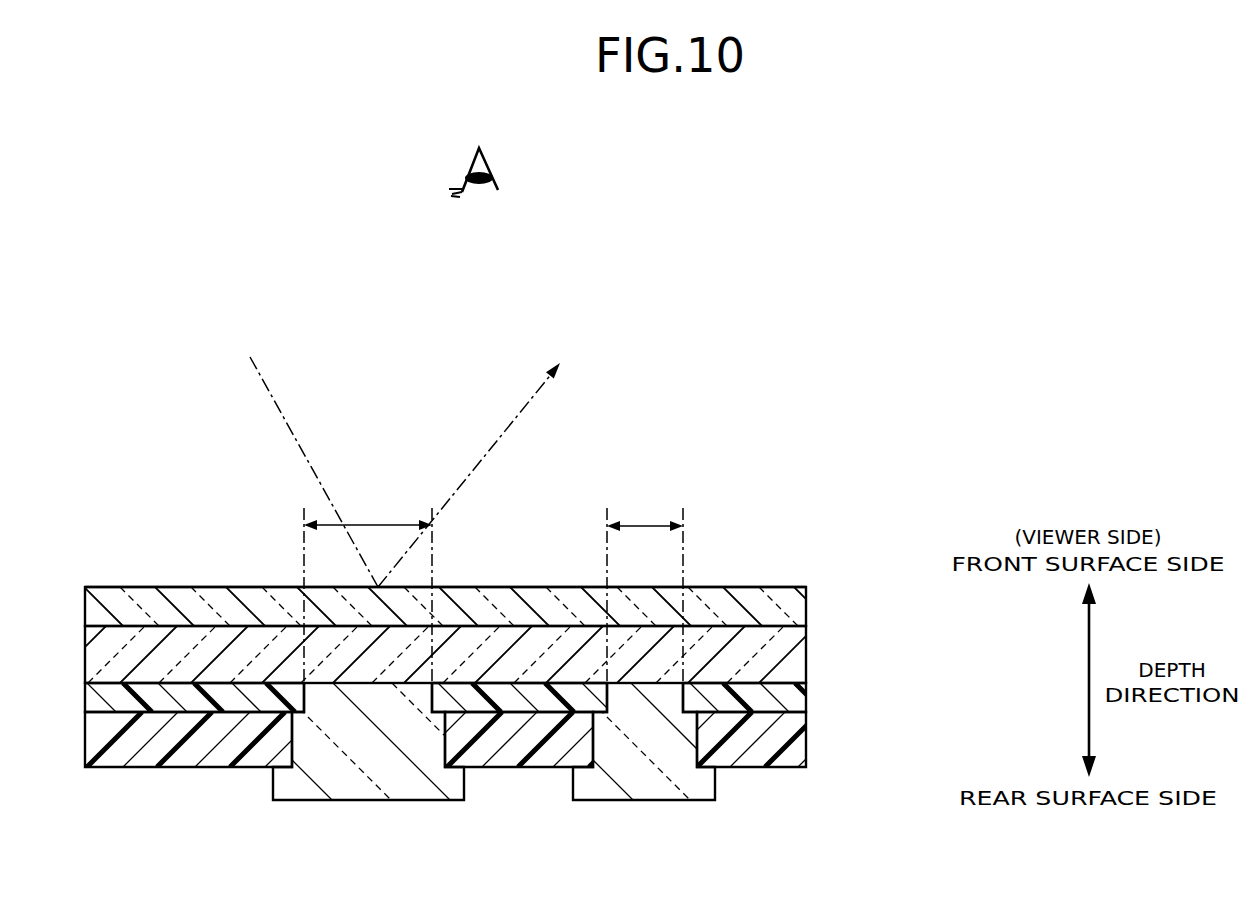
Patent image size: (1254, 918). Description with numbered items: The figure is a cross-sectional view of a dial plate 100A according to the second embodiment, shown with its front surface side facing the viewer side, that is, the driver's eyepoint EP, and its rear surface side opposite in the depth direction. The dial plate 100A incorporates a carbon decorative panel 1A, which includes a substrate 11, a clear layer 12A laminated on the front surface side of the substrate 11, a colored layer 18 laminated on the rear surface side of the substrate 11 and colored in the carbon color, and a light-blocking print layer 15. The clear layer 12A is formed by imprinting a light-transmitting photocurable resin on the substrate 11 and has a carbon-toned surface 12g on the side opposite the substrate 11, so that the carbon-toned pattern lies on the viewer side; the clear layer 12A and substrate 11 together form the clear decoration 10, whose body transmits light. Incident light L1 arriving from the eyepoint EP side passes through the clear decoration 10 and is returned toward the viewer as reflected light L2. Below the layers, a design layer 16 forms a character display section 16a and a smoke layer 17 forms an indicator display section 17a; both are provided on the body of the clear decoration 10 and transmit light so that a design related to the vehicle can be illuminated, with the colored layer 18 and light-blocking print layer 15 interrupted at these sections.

The dial plate 100A is at (540, 602).
The carbon decorative panel 1A is at (540, 677).
The clear decoration 10 is at (503, 635).
The clear layer 12A is at (806, 609).
The substrate 11 is at (806, 660).
The colored layer 18 is at (806, 700).
The light-blocking print layer 15 is at (515, 739).
The design layer 16 is at (370, 802).
The smoke layer 17 is at (647, 802).
The character display section 16a is at (376, 525).
The indicator display section 17a is at (650, 526).
The carbon-toned surface 12g is at (211, 576).
The incident light L1 is at (273, 398).
The reflected light L2 is at (530, 400).
The eyepoint EP is at (488, 158).